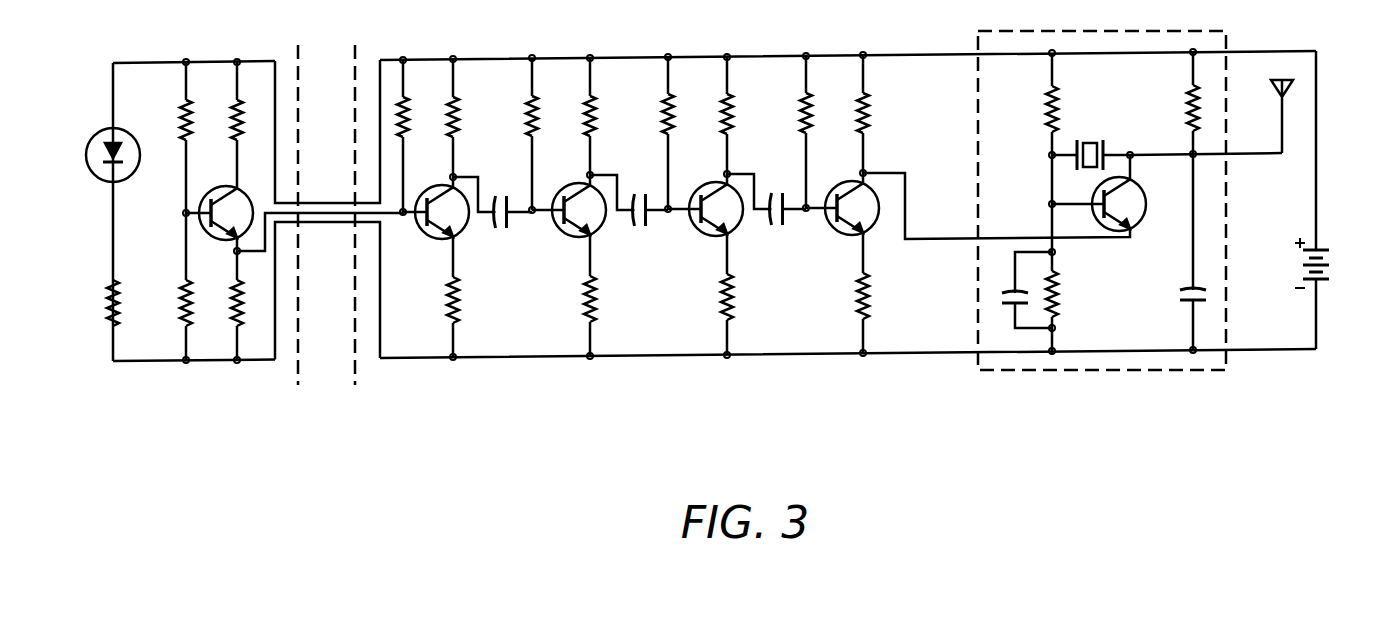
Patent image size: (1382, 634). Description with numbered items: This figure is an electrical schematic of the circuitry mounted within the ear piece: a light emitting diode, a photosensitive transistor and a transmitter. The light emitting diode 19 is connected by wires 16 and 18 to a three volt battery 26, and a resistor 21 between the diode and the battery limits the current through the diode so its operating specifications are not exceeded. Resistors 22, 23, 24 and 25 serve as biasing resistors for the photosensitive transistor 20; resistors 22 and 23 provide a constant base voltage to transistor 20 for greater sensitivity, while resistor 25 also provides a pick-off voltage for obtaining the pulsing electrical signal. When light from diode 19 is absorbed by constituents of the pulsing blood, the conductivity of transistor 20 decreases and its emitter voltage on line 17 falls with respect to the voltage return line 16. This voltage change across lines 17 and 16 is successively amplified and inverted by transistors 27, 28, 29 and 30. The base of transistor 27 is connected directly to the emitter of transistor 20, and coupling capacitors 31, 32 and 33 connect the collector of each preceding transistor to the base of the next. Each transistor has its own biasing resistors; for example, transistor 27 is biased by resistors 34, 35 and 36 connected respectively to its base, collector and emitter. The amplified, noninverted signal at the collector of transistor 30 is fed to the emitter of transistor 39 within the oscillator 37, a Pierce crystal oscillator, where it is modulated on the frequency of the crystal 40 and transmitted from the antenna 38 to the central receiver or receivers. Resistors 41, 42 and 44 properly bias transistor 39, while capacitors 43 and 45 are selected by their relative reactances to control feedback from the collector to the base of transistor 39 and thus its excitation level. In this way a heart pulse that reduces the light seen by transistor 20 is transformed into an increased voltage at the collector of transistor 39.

The wire 16 is at (307, 223).
The line 17 is at (309, 213).
The wire 18 is at (305, 203).
The light emitting diode 19 is at (131, 175).
The photosensitive transistor 20 is at (236, 186).
The resistor 21 is at (117, 287).
The resistor 22 is at (186, 106).
The resistor 23 is at (190, 288).
The resistor 24 is at (237, 104).
The resistor 25 is at (238, 322).
The battery 26 is at (1320, 249).
The transistor 27 is at (438, 238).
The transistor 28 is at (578, 238).
The transistor 29 is at (716, 235).
The transistor 30 is at (851, 235).
The coupling capacitor 31 is at (506, 230).
The coupling capacitor 32 is at (645, 230).
The coupling capacitor 33 is at (782, 230).
The biasing resistor 34 is at (404, 104).
The biasing resistor 35 is at (454, 105).
The biasing resistor 36 is at (457, 300).
The oscillator 37 is at (1063, 372).
The antenna 38 is at (1282, 92).
The transistor 39 is at (1140, 224).
The crystal 40 is at (1096, 139).
The resistor 41 is at (1050, 101).
The resistor 42 is at (1190, 100).
The capacitor 43 is at (1191, 302).
The resistor 44 is at (1056, 294).
The capacitor 45 is at (1005, 300).